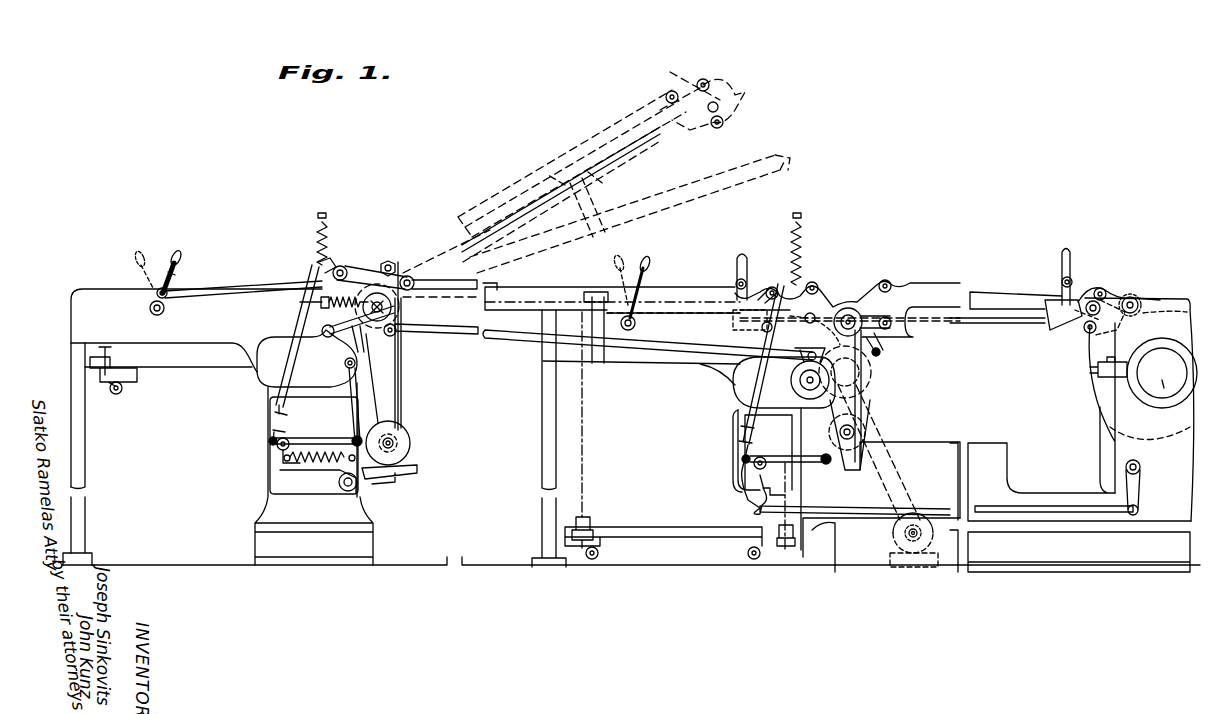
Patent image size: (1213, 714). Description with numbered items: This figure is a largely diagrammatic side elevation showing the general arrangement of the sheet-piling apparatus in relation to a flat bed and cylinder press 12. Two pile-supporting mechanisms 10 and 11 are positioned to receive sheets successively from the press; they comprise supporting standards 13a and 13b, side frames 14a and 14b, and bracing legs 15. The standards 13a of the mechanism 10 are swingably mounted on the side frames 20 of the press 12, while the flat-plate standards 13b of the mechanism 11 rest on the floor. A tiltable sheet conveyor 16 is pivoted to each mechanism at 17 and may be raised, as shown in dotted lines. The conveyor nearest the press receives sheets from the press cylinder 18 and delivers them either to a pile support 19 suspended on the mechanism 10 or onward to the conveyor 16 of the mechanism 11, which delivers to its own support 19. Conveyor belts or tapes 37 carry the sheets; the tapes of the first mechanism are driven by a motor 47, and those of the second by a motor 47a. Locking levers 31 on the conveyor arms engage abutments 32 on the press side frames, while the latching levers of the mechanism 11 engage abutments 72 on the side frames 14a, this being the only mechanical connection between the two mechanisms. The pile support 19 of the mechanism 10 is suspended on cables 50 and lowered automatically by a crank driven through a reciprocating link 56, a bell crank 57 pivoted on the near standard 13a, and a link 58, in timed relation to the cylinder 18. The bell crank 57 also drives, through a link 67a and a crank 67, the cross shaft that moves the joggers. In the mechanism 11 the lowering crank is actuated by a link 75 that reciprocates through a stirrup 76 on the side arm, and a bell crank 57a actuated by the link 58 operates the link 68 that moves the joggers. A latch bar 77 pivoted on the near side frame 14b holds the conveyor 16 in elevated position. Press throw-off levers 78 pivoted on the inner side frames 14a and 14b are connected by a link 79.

The pile-supporting mechanism 10 is at (713, 366).
The pile-supporting mechanism 11 is at (98, 296).
The flat bed and cylinder press 12 is at (1092, 372).
The supporting standards 13a is at (738, 431).
The supporting standards 13b is at (277, 486).
The side frames 14a is at (635, 360).
The side frames 14b is at (177, 341).
The bracing legs 15 is at (86, 445).
The tiltable sheet conveyor 16 is at (523, 195).
The pivot 17 is at (372, 270).
The press cylinder 18 is at (1090, 402).
The pile support 19 is at (227, 368).
The side frames of the press 20 is at (1003, 464).
The locking levers 31 is at (732, 294).
The abutments 32 is at (1064, 328).
The conveyor belts or tapes 37 is at (982, 318).
The motor 47 is at (895, 537).
The motor 47a is at (406, 446).
The cables 50 is at (584, 447).
The reciprocating link 56 is at (926, 512).
The bell crank 57 is at (805, 460).
The bell crank 57a is at (318, 446).
The link 58 is at (399, 398).
The crank 67 is at (320, 264).
The link 67a is at (750, 404).
The cranks 68 is at (300, 303).
The abutments 72 is at (758, 290).
The link 75 is at (677, 212).
The stirrup 76 is at (580, 205).
The latch bar 77 is at (396, 258).
The press throw-off levers 78 is at (158, 264).
The link 79 is at (224, 296).